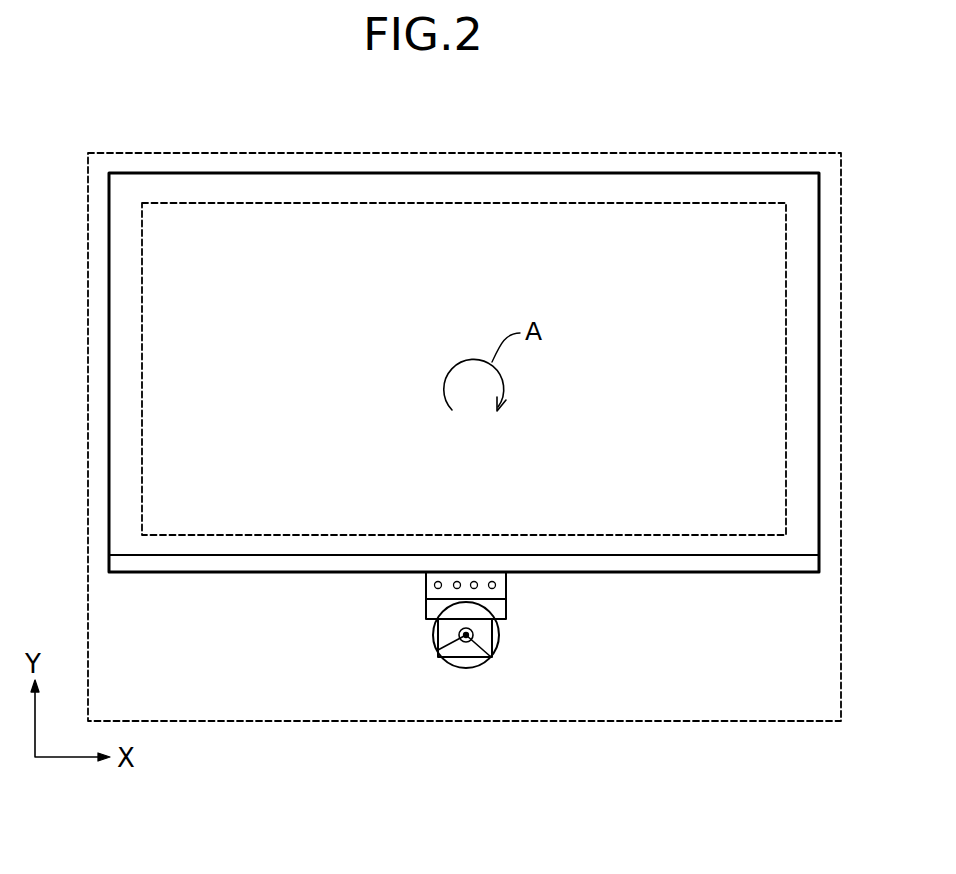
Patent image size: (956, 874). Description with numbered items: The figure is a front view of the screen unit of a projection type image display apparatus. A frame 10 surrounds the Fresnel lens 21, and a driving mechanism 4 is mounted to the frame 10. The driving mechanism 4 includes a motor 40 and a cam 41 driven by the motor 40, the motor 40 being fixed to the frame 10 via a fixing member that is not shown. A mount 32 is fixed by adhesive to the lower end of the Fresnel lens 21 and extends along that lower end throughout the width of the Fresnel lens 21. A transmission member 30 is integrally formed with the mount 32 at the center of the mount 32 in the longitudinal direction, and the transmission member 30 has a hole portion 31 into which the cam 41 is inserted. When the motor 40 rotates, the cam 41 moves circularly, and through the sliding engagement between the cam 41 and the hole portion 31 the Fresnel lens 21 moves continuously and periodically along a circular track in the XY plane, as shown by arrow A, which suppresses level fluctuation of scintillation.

The frame 10 is at (452, 153).
The Fresnel lens 21 is at (588, 173).
The transmission member 30 is at (507, 605).
The hole portion 31 is at (437, 652).
The mount 32 is at (388, 573).
The motor 40 is at (468, 661).
The cam 41 is at (492, 656).
The driving mechanism 4 is at (437, 763).